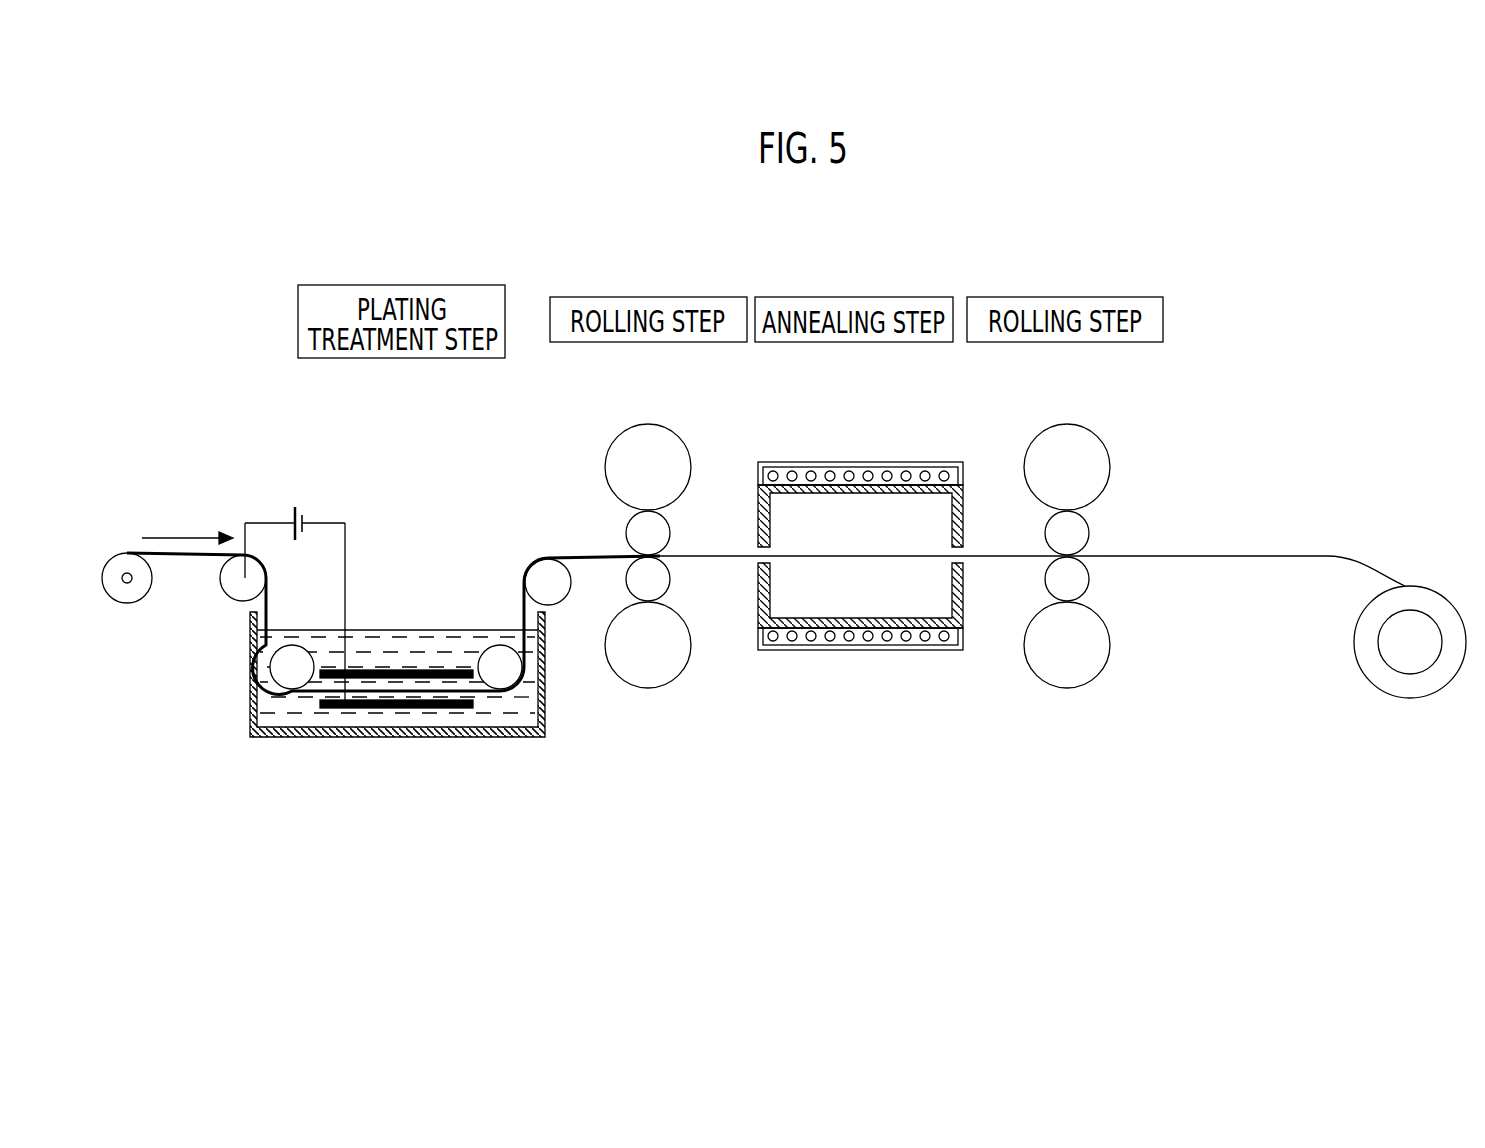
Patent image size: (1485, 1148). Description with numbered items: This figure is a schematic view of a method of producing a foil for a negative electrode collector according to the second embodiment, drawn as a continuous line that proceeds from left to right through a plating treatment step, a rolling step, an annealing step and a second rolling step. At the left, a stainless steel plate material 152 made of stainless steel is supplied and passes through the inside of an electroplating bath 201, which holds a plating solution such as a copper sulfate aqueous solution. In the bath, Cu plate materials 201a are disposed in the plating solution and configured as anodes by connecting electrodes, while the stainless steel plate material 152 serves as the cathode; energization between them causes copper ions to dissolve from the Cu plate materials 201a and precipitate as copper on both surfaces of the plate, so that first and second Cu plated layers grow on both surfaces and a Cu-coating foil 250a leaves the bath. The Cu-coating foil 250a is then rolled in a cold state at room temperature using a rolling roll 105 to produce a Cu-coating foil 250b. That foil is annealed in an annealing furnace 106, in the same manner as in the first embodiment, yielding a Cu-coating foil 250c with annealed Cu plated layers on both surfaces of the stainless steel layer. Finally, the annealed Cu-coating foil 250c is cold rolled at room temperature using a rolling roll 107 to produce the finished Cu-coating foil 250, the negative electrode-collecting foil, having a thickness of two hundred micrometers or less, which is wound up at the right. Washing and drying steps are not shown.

The stainless steel plate material 152 is at (121, 553).
The electroplating bath 201 is at (438, 522).
The Cu plate materials 201a is at (368, 668).
The Cu-coating foil 250a is at (536, 555).
The rolling roll 105 is at (624, 421).
The Cu-coating foil 250b is at (730, 555).
The annealing furnace 106 is at (864, 462).
The Cu-coating foil 250c is at (985, 553).
The rolling roll 107 is at (1071, 423).
The Cu-coating foil 250 is at (1293, 553).